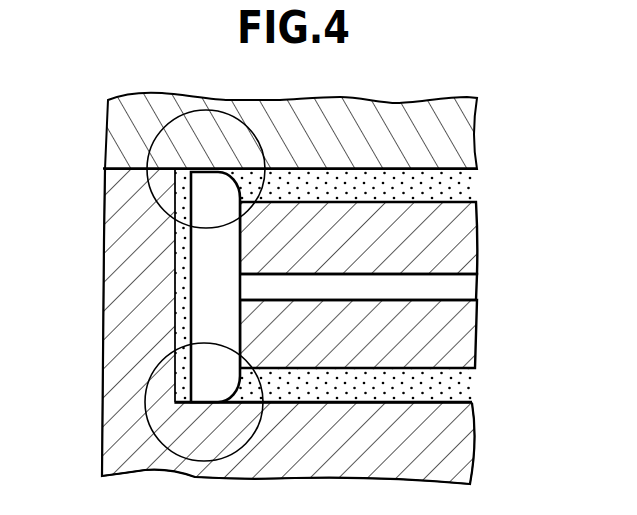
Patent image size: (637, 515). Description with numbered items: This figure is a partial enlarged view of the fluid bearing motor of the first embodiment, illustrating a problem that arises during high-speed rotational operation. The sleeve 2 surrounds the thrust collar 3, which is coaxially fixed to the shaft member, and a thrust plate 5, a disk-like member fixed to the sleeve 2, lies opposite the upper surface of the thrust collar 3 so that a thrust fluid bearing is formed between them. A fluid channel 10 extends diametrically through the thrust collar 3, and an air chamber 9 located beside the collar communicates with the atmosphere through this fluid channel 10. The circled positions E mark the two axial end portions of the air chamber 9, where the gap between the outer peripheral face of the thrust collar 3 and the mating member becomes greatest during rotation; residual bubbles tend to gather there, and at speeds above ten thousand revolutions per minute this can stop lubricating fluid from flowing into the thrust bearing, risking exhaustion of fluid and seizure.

The sleeve 2 is at (126, 242).
The thrust collar 3 is at (452, 237).
The thrust plate 5 is at (453, 132).
The air chamber 9 is at (198, 287).
The fluid channel 10 is at (452, 290).
The positions E is at (150, 194).